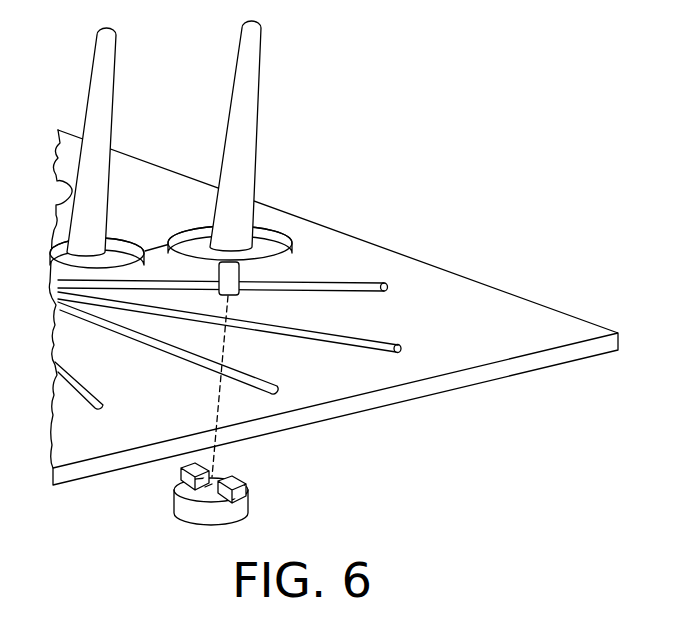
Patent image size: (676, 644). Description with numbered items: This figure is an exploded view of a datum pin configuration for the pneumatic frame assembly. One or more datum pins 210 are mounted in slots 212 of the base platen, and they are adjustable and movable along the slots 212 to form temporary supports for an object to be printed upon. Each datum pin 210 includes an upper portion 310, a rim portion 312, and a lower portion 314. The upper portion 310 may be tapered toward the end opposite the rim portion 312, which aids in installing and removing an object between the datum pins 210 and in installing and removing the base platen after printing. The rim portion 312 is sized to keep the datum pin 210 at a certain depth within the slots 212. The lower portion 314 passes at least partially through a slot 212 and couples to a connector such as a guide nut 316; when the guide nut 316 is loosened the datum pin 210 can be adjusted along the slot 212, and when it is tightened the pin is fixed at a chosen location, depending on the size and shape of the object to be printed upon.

The datum pin 210 is at (333, 278).
The slot 212 is at (275, 383).
The upper portion 310 is at (257, 93).
The rim portion 312 is at (272, 265).
The lower portion 314 is at (240, 297).
The guide nut 316 is at (242, 510).